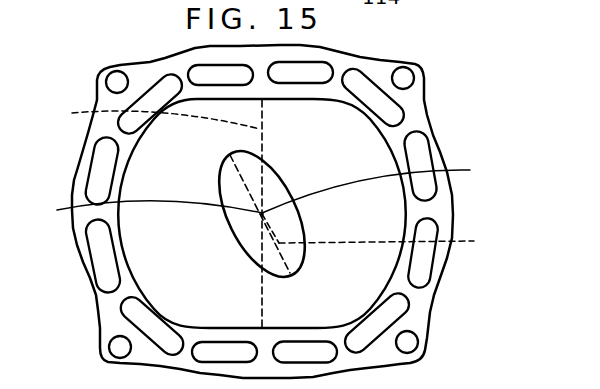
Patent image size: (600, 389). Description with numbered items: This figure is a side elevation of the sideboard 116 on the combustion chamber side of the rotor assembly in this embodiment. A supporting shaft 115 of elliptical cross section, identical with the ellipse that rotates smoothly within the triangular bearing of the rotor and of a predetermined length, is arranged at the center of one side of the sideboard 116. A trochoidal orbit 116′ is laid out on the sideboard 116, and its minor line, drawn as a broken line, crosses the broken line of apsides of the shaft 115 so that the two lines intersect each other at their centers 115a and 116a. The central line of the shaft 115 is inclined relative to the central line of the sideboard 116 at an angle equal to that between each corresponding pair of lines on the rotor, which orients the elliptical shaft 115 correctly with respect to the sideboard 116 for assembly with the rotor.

The supporting shaft 115 is at (247, 228).
The center of the line of apsides 115a is at (390, 187).
The sideboard 116 is at (355, 272).
The trochoidal orbit 116′ is at (385, 137).
The center of the minor line 116a is at (137, 214).